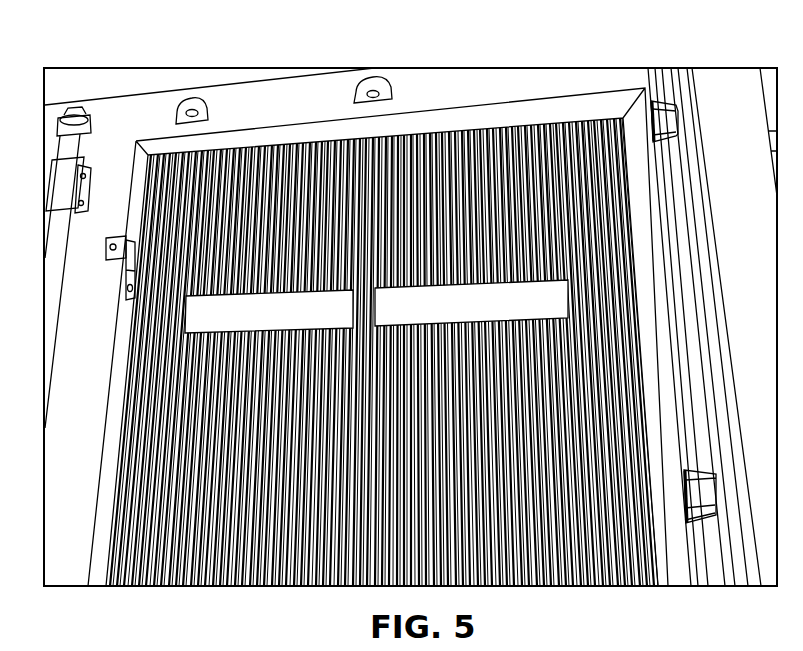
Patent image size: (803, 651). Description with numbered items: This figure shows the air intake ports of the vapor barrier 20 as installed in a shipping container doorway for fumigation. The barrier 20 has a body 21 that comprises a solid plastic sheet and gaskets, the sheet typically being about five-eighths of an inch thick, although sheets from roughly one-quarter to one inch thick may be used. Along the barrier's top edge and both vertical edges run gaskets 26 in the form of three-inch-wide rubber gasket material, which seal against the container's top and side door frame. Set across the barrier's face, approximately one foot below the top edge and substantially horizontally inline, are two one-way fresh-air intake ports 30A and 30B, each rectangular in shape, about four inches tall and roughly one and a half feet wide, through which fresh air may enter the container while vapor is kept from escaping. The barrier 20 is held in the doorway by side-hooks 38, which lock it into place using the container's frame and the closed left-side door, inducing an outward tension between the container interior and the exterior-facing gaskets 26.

The vapor barrier 20 is at (258, 100).
The body 21 is at (446, 219).
The gaskets 26 is at (636, 133).
The one-way fresh-air intake port 30A is at (290, 282).
The one-way fresh-air intake port 30B is at (462, 272).
The side-hooks 38 is at (117, 265).